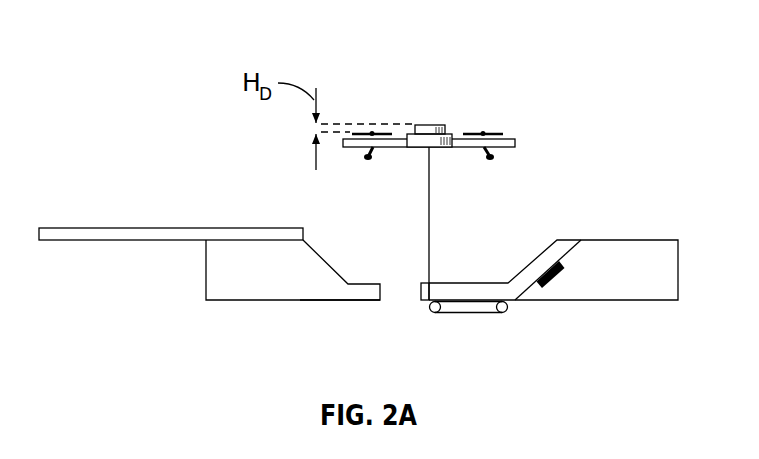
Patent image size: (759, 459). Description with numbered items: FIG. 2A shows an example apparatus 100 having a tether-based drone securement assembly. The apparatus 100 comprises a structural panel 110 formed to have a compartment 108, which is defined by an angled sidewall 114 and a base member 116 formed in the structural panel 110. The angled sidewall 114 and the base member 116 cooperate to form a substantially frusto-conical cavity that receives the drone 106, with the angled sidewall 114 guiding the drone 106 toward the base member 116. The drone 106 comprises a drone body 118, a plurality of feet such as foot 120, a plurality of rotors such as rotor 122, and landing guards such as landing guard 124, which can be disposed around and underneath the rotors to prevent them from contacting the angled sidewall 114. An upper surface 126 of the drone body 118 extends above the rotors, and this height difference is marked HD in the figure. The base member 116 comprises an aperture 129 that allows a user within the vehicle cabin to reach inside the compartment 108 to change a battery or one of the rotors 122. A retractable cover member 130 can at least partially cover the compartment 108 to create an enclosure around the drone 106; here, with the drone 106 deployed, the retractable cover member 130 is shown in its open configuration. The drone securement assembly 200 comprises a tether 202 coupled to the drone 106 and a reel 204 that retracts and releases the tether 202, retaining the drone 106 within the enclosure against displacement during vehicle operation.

The apparatus 100 is at (602, 97).
The drone 106 is at (447, 133).
The compartment 108 is at (521, 234).
The structural panel 110 is at (653, 289).
The angled sidewall 114 is at (323, 262).
The base member 116 is at (358, 300).
The drone body 118 is at (414, 127).
The foot 120 is at (493, 156).
The rotor 122 is at (472, 132).
The landing guard 124 is at (508, 135).
The upper surface 126 is at (437, 125).
The aperture 129 is at (409, 285).
The retractable cover member 130 is at (172, 228).
The drone securement assembly 200 is at (521, 315).
The tether 202 is at (430, 223).
The reel 204 is at (573, 243).